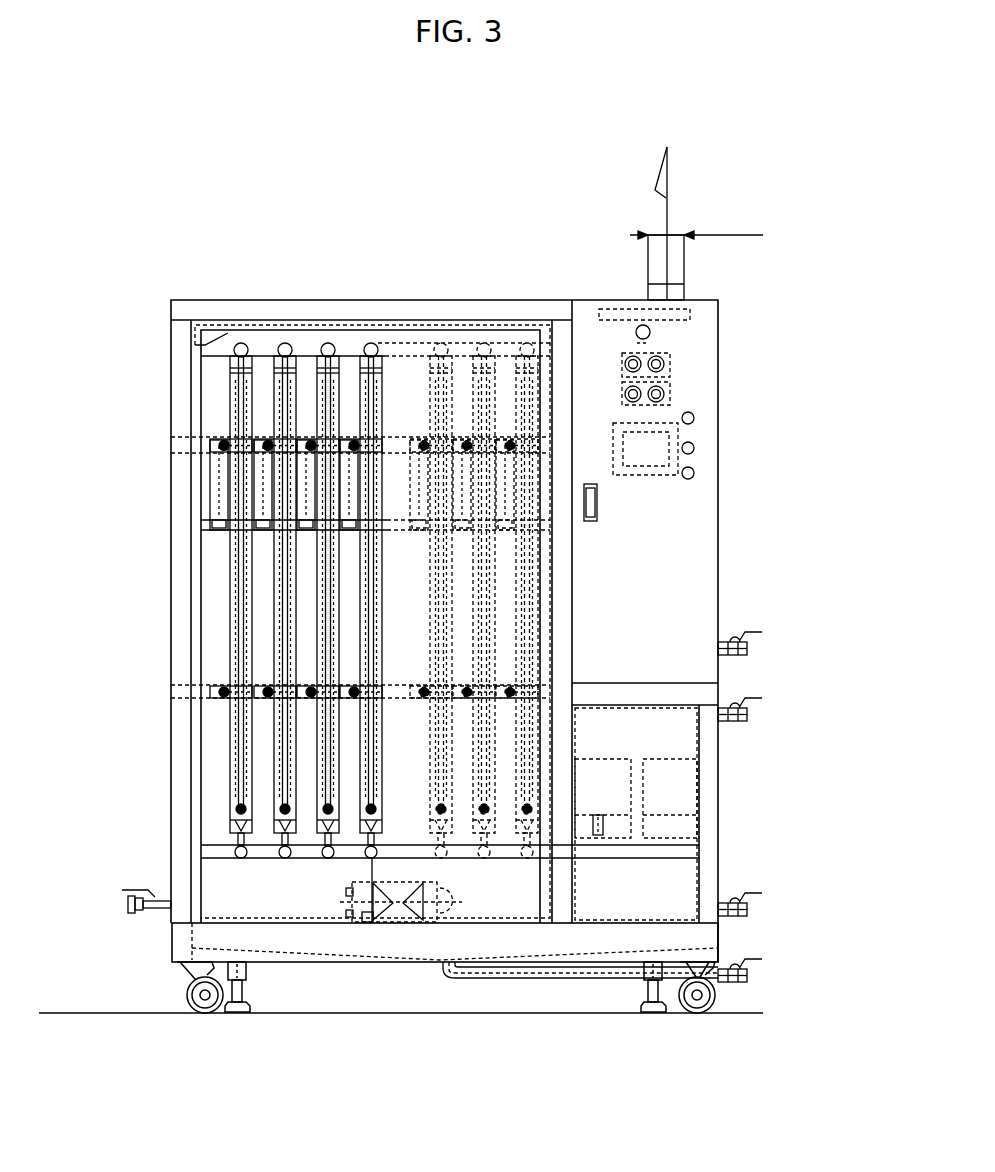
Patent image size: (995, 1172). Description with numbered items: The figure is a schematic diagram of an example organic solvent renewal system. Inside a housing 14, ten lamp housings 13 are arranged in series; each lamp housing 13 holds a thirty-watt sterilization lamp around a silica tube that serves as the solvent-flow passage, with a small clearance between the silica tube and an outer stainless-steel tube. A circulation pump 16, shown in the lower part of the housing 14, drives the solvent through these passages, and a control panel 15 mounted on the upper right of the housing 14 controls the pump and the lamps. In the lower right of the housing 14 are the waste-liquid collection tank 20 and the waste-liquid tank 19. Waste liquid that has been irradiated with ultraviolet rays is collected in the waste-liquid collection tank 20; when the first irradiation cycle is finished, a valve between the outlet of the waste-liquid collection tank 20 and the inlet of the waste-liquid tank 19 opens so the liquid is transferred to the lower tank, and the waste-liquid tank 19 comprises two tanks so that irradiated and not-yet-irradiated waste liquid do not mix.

The lamp housing 13 is at (233, 675).
The housing 14 is at (172, 576).
The control panel 15 is at (688, 510).
The circulation pump 16 is at (397, 928).
The waste-liquid tank 19 is at (697, 827).
The waste-liquid collection tank 20 is at (697, 777).